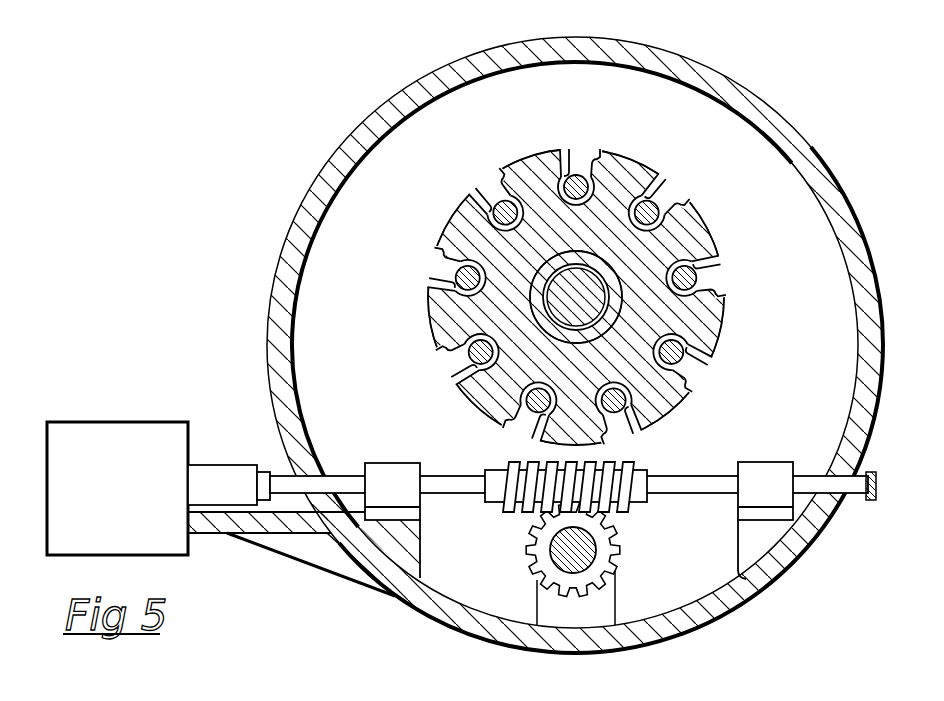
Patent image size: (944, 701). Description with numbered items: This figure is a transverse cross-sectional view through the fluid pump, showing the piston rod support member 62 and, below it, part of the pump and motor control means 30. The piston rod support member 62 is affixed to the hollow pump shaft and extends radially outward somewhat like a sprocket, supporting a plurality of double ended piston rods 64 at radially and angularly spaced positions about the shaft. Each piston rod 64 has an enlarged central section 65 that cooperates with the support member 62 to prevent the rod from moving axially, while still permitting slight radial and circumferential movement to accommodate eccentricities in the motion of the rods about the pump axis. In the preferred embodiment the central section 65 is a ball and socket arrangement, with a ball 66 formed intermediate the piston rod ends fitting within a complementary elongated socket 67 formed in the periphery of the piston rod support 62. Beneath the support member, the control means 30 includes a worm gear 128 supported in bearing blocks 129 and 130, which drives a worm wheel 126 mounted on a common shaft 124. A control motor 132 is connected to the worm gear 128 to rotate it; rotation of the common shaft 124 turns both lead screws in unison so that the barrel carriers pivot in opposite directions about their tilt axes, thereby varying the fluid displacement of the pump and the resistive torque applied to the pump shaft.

The pump and motor control means 30 is at (185, 422).
The piston rod support member 62 is at (704, 243).
The double ended piston rods 64 is at (598, 264).
The enlarged central section 65 is at (575, 170).
The ball 66 is at (650, 183).
The elongated socket 67 is at (590, 156).
The common shaft 124 is at (592, 551).
The worm wheel 126 is at (608, 528).
The worm gear 128 is at (630, 468).
The bearing block 129 is at (422, 468).
The bearing block 130 is at (759, 461).
The control motor 132 is at (138, 502).